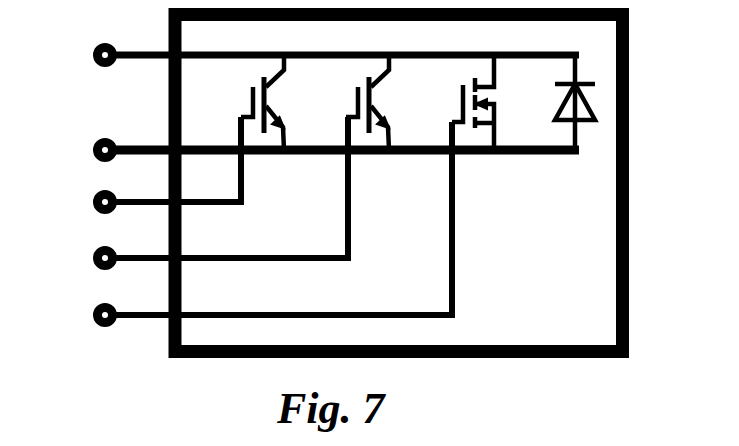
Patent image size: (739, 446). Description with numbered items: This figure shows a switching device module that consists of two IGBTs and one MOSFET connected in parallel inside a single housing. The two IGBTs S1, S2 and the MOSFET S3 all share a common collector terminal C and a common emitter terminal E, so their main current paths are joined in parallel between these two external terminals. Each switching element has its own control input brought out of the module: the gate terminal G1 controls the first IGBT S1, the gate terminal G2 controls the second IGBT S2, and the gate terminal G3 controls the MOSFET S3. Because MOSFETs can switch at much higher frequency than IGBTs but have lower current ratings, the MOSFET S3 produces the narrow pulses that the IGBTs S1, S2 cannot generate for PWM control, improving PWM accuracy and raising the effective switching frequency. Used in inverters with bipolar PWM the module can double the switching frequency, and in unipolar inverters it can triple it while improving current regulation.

The collector terminal C is at (317, 41).
The emitter terminal E is at (318, 136).
The gate terminal of first switching element G1 is at (133, 172).
The gate terminal of second switching element G2 is at (187, 200).
The gate terminal of third switching element G3 is at (239, 230).
The first switching element (IGBT) S1 is at (274, 132).
The second switching element (IGBT) S2 is at (380, 132).
The third switching element (MOSFET) S3 is at (485, 132).